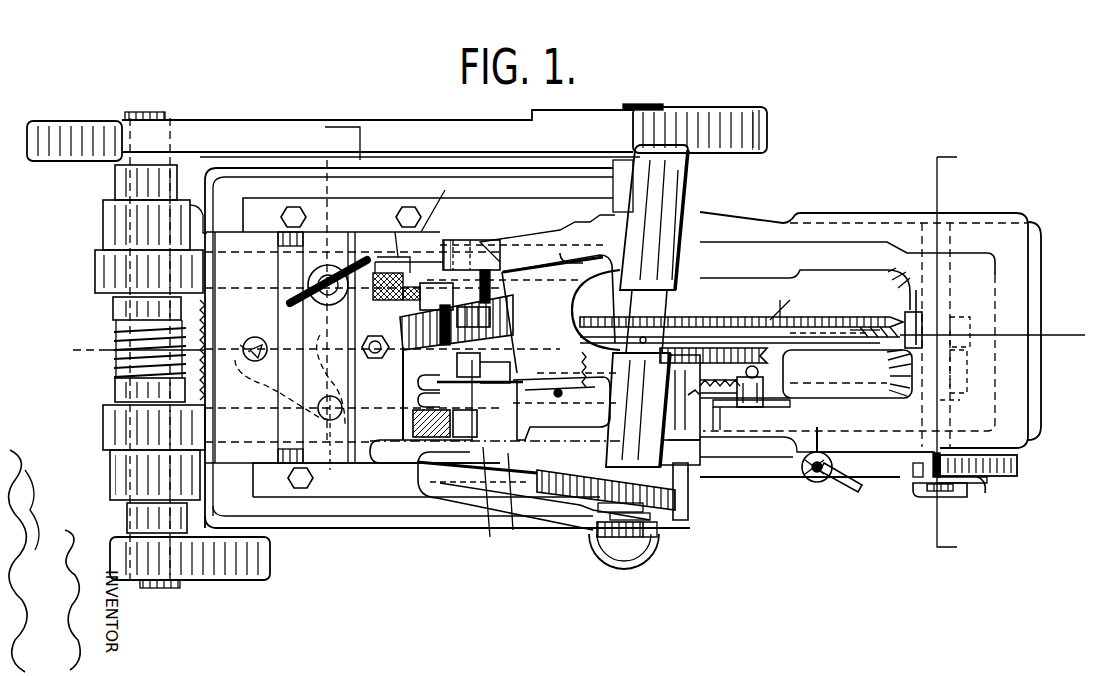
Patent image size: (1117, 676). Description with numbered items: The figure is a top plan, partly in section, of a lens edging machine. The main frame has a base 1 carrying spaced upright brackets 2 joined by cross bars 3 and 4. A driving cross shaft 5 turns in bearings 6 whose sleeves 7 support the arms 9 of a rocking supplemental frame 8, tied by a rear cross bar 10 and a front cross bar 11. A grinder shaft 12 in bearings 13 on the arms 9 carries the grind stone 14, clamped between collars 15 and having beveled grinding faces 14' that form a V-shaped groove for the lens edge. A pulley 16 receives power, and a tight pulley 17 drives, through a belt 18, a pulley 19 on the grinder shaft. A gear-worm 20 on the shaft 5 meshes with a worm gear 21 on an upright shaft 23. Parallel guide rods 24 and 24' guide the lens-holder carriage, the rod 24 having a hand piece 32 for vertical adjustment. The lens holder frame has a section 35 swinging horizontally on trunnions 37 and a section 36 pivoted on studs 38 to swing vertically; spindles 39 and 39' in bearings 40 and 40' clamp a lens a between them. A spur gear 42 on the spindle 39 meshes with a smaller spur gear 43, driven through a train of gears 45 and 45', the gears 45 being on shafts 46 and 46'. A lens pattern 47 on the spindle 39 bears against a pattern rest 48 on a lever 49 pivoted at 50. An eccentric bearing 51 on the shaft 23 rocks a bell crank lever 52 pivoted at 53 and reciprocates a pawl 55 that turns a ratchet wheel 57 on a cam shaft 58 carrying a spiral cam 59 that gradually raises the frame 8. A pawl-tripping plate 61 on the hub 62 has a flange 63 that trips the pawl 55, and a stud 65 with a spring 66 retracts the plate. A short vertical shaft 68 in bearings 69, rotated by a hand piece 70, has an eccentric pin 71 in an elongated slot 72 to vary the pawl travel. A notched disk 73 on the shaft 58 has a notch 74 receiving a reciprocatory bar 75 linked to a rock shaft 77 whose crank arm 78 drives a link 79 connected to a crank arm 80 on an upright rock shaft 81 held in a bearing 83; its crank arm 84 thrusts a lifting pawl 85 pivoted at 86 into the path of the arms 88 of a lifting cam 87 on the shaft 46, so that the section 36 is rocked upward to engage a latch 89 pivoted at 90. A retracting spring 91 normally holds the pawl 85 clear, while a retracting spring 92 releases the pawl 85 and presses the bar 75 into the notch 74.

The base 1 is at (435, 512).
The upright brackets 2 is at (383, 232).
The cross bar 3 is at (340, 262).
The cross bar 4 is at (258, 222).
The horizontal cross shaft 5 is at (146, 113).
The bearings 6 is at (112, 230).
The sleeves 7 is at (115, 184).
The supplemental frame 8 is at (970, 265).
The arms 9 is at (455, 367).
The cross bar 10 is at (190, 405).
The cross bar 11 is at (1030, 308).
The horizontal cross shaft 12 is at (644, 104).
The bearings 13 is at (618, 182).
The rotary grind stone 14 is at (830, 318).
The beveled grinding faces 14' is at (864, 316).
The collars 15 is at (783, 310).
The pulley 16 is at (200, 572).
The tight pulley 17 is at (75, 121).
The belt 18 is at (414, 122).
The pulley 19 is at (721, 113).
The gear-worm 20 is at (118, 335).
The worm gear 21 is at (120, 385).
The upright shaft 23 is at (250, 344).
The guide rod 24 is at (352, 270).
The guide rod 24' is at (352, 425).
The hand piece 32 is at (326, 306).
The frame section 35 is at (425, 296).
The frame section 36 is at (543, 258).
The pivotal trunnions 37 is at (362, 347).
The studs 38 is at (470, 250).
The spindle 39 is at (680, 452).
The spindle 39' is at (671, 322).
The bearing 40 is at (684, 397).
The bearing 40' is at (634, 304).
The spur gear 42 is at (690, 492).
The spur gear 43 is at (555, 522).
The gears 45 is at (444, 322).
The gears 45' is at (498, 319).
The shaft 46 is at (558, 314).
The shaft 46' is at (389, 393).
The lens pattern 47 is at (660, 540).
The pattern rest 48 is at (597, 515).
The lever 49 is at (622, 566).
The pivot 50 is at (509, 506).
The eccentric bearing 51 is at (258, 340).
The bell crank lever 52 is at (285, 403).
The pivot 53 is at (330, 398).
The pawl 55 is at (753, 478).
The ratchet wheel 57 is at (1017, 465).
The horizontal cross shaft 58 is at (958, 408).
The spiral cam 59 is at (965, 318).
The pawl-tripping plate 61 is at (905, 483).
The hub 62 is at (915, 497).
The flange 63 is at (955, 448).
The stud 65 is at (935, 497).
The spring 66 is at (980, 493).
The vertical shaft 68 is at (817, 427).
The bearings 69 is at (820, 480).
The hand piece 70 is at (860, 492).
The eccentric pin 71 is at (824, 458).
The slot 72 is at (808, 480).
The circular disk 73 is at (967, 380).
The peripheral notch 74 is at (915, 398).
The reciprocatory bar 75 is at (785, 405).
The rock shaft 77 is at (753, 410).
The crank arm 78 is at (760, 377).
The link 79 is at (527, 378).
The crank arm 80 is at (429, 371).
The upright rock shaft 81 is at (416, 397).
The bearing 83 is at (413, 415).
The crank arm 84 is at (476, 423).
The lifting pawl 85 is at (525, 395).
The pivot 86 is at (559, 398).
The lifting cam 87 is at (460, 365).
The arms 88 is at (480, 370).
The latch 89 is at (440, 240).
The pivot 90 is at (401, 243).
The retracting spring 91 is at (573, 367).
The retracting spring 92 is at (691, 403).
The lens a is at (575, 337).